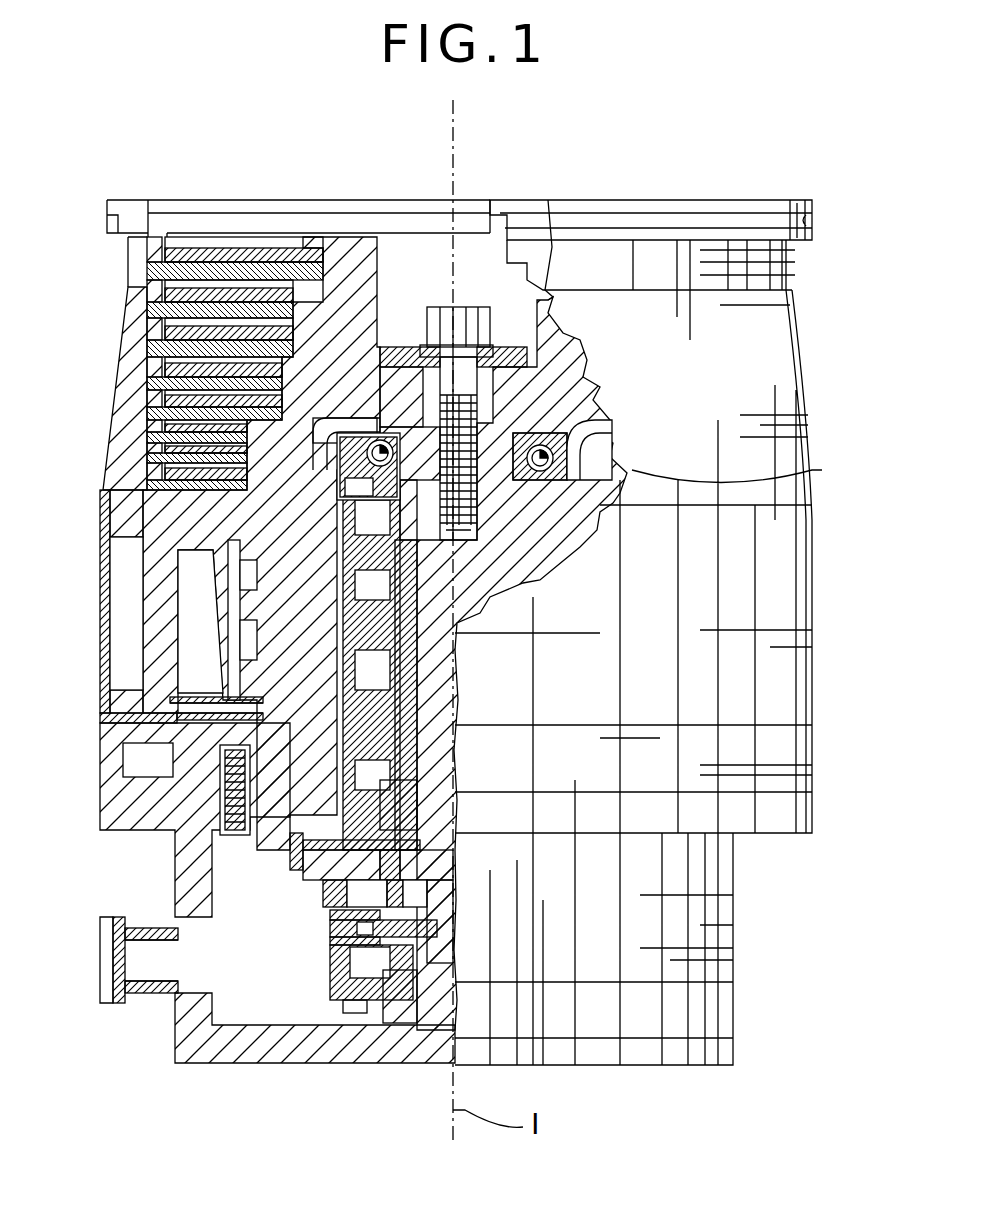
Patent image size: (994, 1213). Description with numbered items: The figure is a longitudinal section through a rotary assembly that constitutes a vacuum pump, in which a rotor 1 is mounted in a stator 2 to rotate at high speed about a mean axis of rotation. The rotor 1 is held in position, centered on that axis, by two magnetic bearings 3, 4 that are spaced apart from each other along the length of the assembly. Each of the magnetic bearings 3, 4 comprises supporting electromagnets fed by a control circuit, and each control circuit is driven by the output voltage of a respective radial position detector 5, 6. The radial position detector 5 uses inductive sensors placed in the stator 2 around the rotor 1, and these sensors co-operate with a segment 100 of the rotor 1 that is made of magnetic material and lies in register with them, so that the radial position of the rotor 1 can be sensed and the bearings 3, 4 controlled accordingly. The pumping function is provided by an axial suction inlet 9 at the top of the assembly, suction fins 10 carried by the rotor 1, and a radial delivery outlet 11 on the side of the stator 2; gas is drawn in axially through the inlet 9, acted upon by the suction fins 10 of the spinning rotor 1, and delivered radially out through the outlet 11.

The rotor 1 is at (549, 200).
The stator 2 is at (300, 652).
The magnetic bearing 3 is at (330, 558).
The magnetic bearing 4 is at (355, 772).
The radial position detector 5 is at (632, 440).
The radial position detector 6 is at (255, 768).
The axial suction inlet 9 is at (671, 597).
The suction fins 10 is at (215, 287).
The radial delivery outlet 11 is at (135, 955).
The segment of the rotor 100 is at (560, 522).